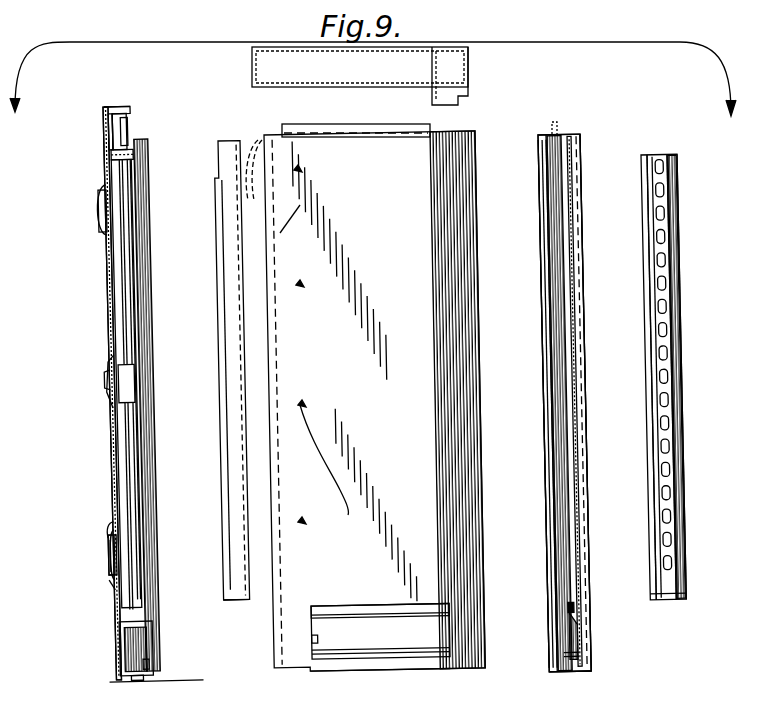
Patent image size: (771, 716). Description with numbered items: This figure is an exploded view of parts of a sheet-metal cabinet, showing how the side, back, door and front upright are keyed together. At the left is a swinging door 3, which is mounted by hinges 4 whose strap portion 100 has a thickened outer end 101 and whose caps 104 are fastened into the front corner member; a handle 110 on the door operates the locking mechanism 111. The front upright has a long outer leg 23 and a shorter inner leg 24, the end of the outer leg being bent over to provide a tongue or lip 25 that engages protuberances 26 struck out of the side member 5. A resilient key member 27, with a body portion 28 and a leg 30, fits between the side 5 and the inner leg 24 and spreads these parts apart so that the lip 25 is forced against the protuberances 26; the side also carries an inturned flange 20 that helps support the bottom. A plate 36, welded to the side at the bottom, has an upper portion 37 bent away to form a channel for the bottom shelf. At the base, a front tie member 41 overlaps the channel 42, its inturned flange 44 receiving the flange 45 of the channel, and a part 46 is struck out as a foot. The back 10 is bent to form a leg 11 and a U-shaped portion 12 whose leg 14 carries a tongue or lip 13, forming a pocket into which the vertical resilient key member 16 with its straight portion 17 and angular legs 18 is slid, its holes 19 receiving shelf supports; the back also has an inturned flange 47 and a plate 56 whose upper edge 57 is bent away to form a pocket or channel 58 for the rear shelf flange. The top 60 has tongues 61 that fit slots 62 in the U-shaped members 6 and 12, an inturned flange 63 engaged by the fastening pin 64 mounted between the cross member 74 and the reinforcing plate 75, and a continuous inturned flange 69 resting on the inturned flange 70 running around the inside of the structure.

The swinging door 3 is at (108, 306).
The hinge 4 is at (97, 246).
The side member 5 is at (372, 343).
The U-shaped member 6 is at (586, 462).
The back 10 is at (576, 380).
The leg 11 is at (574, 190).
The U-shaped portion 12 is at (558, 210).
The tongue or lip 13 is at (543, 258).
The leg 14 is at (548, 236).
The key member 16 is at (666, 156).
The straight portion 17 is at (672, 270).
The legs 18 is at (650, 310).
The holes or apertures 19 is at (252, 140).
The inturned flange 20 is at (358, 676).
The outer leg 23 is at (128, 140).
The inner leg 24 is at (138, 247).
The tongue or lip 25 is at (150, 176).
The protuberances 26 is at (305, 285).
The resilient key member 27 is at (235, 602).
The body portion 28 is at (292, 219).
The leg 30 is at (226, 424).
The plate 36 is at (382, 637).
The upper portion 37 is at (348, 607).
The front tie member or base 41 is at (125, 650).
The channel 42 is at (135, 645).
The inturned flange 44 is at (115, 684).
The flange 45 is at (148, 672).
The part 46 is at (138, 682).
The inturned flange 47 is at (572, 674).
The plate 56 is at (570, 636).
The upper edge 57 is at (567, 608).
The pocket or channel 58 is at (582, 606).
The top 60 is at (124, 107).
The tongues 61 is at (470, 98).
The slots 62 is at (470, 156).
The inturned flange 63 is at (110, 140).
The fastening pin 64 is at (122, 118).
The continuous inturned flange 69 is at (382, 86).
The inturned flange 70 is at (348, 126).
The cross member 74 is at (104, 120).
The reinforcing plate 75 is at (124, 125).
The strap portion 100 is at (110, 542).
The enlarged outer end 101 is at (108, 552).
The cap 104 is at (108, 518).
The handle 110 is at (108, 386).
The locking mechanism 111 is at (126, 385).